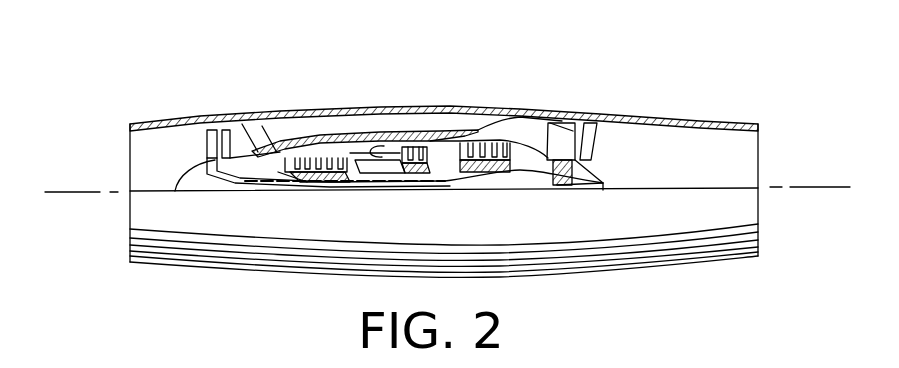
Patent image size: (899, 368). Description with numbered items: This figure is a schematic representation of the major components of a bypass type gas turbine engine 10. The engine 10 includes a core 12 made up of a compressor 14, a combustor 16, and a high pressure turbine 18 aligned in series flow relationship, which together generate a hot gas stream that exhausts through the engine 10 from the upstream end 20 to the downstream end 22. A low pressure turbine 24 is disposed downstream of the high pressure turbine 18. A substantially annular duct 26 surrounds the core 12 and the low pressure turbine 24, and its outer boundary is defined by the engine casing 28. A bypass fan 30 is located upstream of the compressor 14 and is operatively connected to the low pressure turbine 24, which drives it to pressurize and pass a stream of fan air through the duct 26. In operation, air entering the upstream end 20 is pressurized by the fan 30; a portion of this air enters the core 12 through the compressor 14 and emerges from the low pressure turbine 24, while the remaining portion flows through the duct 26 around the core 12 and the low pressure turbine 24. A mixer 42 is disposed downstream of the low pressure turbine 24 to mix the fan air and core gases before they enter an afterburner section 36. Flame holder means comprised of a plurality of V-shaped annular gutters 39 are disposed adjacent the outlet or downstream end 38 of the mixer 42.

The gas turbine engine 10 is at (542, 75).
The core 12 is at (433, 105).
The compressor 14 is at (310, 178).
The combustor 16 is at (387, 150).
The high pressure turbine 18 is at (456, 170).
The upstream end 20 is at (128, 158).
The downstream end 22 is at (760, 167).
The low pressure turbine 24 is at (512, 170).
The annular duct 26 is at (451, 108).
The engine casing 28 is at (172, 112).
The bypass fan 30 is at (207, 143).
The afterburner section 36 is at (674, 148).
The downstream end of mixer 38 is at (561, 118).
The V-shaped annular gutters 39 is at (597, 142).
The mixer 42 is at (568, 168).